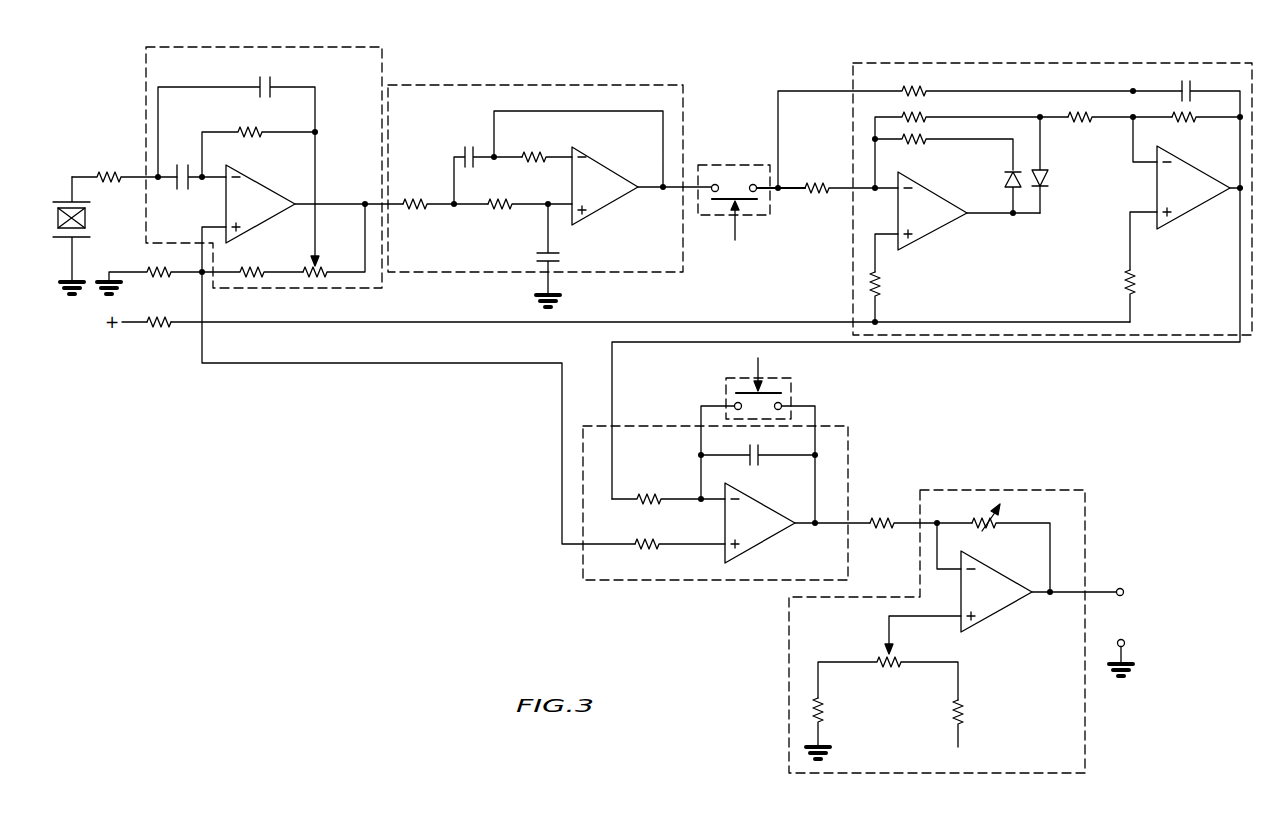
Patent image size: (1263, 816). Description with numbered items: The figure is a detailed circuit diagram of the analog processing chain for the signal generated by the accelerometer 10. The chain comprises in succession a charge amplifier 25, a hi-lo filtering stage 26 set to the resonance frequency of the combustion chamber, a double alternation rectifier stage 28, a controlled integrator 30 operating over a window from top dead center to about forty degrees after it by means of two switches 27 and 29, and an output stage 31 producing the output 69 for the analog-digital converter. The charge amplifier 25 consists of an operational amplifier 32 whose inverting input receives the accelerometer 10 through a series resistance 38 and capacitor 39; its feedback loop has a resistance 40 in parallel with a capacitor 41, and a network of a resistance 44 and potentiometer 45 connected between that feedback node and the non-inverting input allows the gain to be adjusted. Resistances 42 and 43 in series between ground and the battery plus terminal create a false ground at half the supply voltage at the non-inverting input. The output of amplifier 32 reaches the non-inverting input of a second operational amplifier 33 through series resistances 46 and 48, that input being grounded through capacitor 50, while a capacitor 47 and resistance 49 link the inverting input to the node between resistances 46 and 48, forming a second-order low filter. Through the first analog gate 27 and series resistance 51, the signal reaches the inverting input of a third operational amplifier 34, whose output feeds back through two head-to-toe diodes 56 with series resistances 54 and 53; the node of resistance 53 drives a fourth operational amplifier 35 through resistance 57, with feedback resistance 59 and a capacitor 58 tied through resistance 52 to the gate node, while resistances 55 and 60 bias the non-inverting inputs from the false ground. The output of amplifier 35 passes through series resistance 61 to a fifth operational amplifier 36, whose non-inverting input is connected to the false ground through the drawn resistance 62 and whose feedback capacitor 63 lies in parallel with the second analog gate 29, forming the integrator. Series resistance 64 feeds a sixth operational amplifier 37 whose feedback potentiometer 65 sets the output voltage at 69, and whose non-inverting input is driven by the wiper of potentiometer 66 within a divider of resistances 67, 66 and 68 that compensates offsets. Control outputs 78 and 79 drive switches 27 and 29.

The accelerometer 10 is at (92, 216).
The charge amplifier 25 is at (386, 69).
The hi-lo filtering stage 26 is at (614, 83).
The first analog gate 27 is at (742, 160).
The double alternation rectifier stage 28 is at (848, 71).
The second analog gate 29 is at (800, 392).
The controlled integrator 30 is at (853, 461).
The output stage 31 is at (780, 683).
The operational amplifier 32 is at (262, 215).
The second operational amplifier 33 is at (605, 168).
The third operational amplifier 34 is at (935, 225).
The fourth operational amplifier 35 is at (1195, 210).
The fifth operational amplifier 36 is at (780, 535).
The sixth operational amplifier 37 is at (1012, 603).
The resistance 38 is at (108, 170).
The capacitor 39 is at (194, 194).
The resistance 40 is at (258, 137).
The capacitor 41 is at (272, 84).
The resistance 42 is at (162, 278).
The resistance 43 is at (155, 328).
The resistance 44 is at (262, 266).
The potentiometer 45 is at (322, 266).
The resistance 46 is at (426, 210).
The capacitor 47 is at (462, 150).
The resistance 48 is at (508, 210).
The resistance 49 is at (533, 152).
The capacitor 50 is at (560, 256).
The series resistance 51 is at (823, 183).
The resistance 52 is at (918, 86).
The series resistance 53 is at (928, 114).
The series resistance 54 is at (925, 143).
The resistance 55 is at (880, 283).
The diodes 56 is at (1043, 195).
The resistance 57 is at (1090, 122).
The capacitor 58 is at (1180, 88).
The resistance 59 is at (1192, 124).
The resistance 60 is at (1133, 272).
The series resistance 61 is at (655, 494).
The resistor 62 is at (660, 542).
The capacitor 63 is at (762, 460).
The series resistance 64 is at (884, 516).
The adjustable potentiometer 65 is at (998, 530).
The potentiometer 66 is at (900, 670).
The resistance 67 is at (826, 712).
The resistance 68 is at (968, 715).
The output 69 is at (1110, 586).
The output 78 is at (735, 230).
The output 79 is at (760, 365).